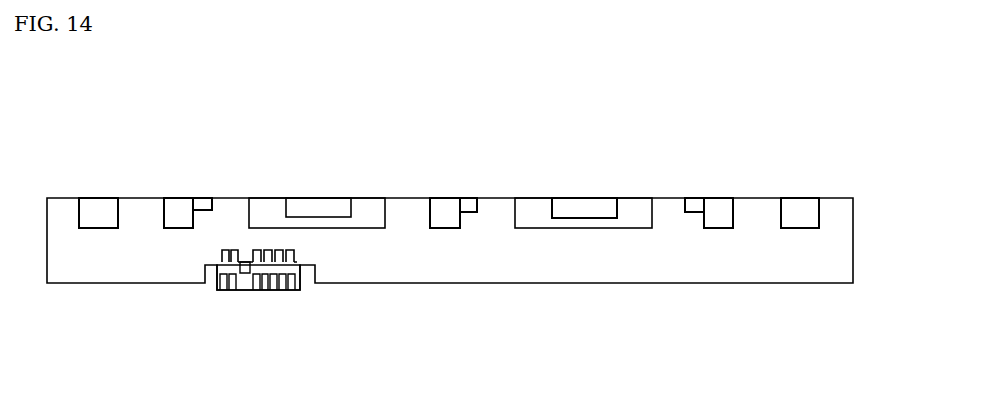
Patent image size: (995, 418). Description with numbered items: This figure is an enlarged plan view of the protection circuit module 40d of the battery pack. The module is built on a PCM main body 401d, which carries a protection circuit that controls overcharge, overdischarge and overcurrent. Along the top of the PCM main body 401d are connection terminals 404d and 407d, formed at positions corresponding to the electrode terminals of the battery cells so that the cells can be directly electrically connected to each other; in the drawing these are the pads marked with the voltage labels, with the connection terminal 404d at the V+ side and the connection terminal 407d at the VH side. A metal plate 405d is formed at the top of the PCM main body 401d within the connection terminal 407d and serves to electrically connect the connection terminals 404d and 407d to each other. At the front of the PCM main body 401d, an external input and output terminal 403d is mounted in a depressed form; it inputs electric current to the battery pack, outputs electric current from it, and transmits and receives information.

The protection circuit module 40d is at (87, 134).
The PCM main body 401d is at (720, 265).
The external input and output terminal 403d is at (268, 290).
The connection terminal 404d is at (808, 198).
The metal plate 405d is at (568, 217).
The connection terminal 407d is at (637, 198).